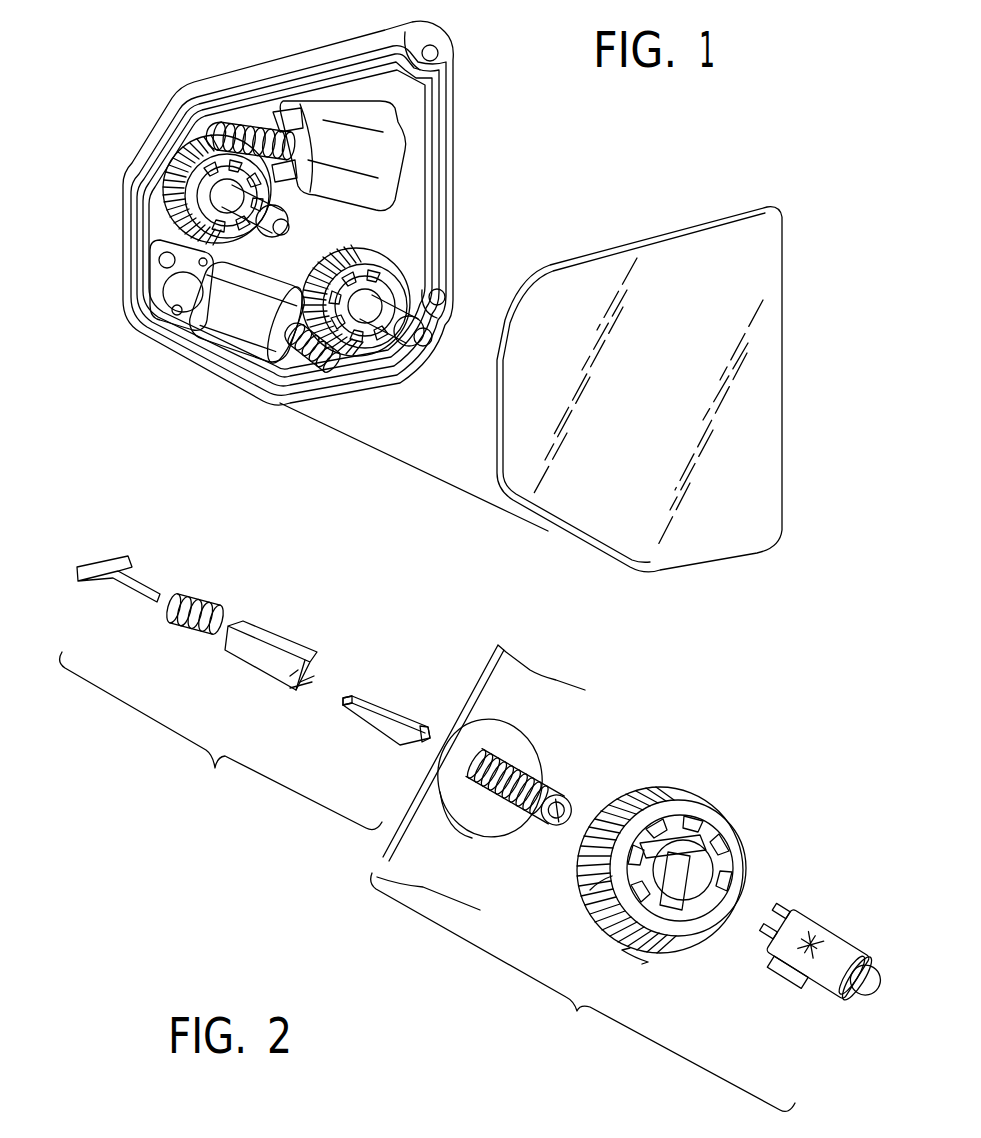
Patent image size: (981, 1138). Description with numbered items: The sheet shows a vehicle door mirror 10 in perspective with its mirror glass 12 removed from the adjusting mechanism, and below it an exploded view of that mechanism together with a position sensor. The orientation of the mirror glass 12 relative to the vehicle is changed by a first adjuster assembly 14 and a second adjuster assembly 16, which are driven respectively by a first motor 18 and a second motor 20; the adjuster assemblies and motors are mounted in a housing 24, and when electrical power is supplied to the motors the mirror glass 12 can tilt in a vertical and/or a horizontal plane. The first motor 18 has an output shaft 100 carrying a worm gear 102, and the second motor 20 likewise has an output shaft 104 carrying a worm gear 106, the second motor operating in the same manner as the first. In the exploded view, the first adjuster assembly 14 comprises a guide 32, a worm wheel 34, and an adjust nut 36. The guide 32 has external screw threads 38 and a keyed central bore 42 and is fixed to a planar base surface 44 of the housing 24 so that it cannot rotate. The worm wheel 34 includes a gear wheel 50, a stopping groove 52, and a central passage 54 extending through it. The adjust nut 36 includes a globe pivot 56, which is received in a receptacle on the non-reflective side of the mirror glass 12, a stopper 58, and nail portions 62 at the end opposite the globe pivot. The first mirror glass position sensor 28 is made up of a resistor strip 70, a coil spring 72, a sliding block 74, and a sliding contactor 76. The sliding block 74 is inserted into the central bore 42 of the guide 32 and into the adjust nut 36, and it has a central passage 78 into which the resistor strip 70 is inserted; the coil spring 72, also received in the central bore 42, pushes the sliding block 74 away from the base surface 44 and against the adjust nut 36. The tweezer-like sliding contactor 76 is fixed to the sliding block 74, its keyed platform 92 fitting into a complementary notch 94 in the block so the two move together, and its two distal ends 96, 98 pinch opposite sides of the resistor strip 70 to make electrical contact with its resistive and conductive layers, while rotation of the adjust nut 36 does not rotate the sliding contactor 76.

In FIG. 1, the vehicle door mirror 10 is at (637, 156).
In FIG. 1, the mirror glass 12 is at (787, 203).
In FIG. 1, the first adjuster assembly 14 is at (280, 230).
In FIG. 2, the first adjuster assembly 14 is at (583, 992).
In FIG. 1, the second adjuster assembly 16 is at (385, 305).
In FIG. 1, the first motor 18 is at (355, 117).
In FIG. 1, the second motor 20 is at (247, 340).
In FIG. 1, the housing 24 is at (320, 58).
In FIG. 2, the first mirror glass position sensor 28 is at (221, 741).
In FIG. 2, the guide 32 is at (507, 752).
In FIG. 2, the worm wheel 34 is at (714, 791).
In FIG. 2, the adjust nut 36 is at (819, 911).
In FIG. 2, the external screw threads 38 is at (557, 797).
In FIG. 2, the keyed central bore 42 is at (553, 827).
In FIG. 2, the planar base surface 44 is at (503, 673).
In FIG. 2, the gear wheel 50 is at (590, 890).
In FIG. 2, the stopping groove 52 is at (617, 917).
In FIG. 2, the central passage 54 is at (698, 870).
In FIG. 2, the globe pivot 56 is at (867, 983).
In FIG. 2, the stopper 58 is at (773, 967).
In FIG. 2, the nail portions 62 is at (777, 910).
In FIG. 2, the resistor strip 70 is at (143, 577).
In FIG. 2, the coil spring 72 is at (203, 603).
In FIG. 2, the sliding block 74 is at (260, 643).
In FIG. 2, the sliding contactor 76 is at (393, 713).
In FIG. 2, the central passage 78 is at (310, 667).
In FIG. 2, the keyed platform 92 is at (423, 727).
In FIG. 2, the notch 94 is at (288, 687).
In FIG. 2, the distal end 96 is at (348, 700).
In FIG. 2, the distal end 98 is at (345, 703).
In FIG. 1, the output shaft 100 is at (213, 133).
In FIG. 1, the worm gear 102 is at (247, 123).
In FIG. 1, the output shaft 104 is at (290, 347).
In FIG. 1, the worm gear 106 is at (338, 375).